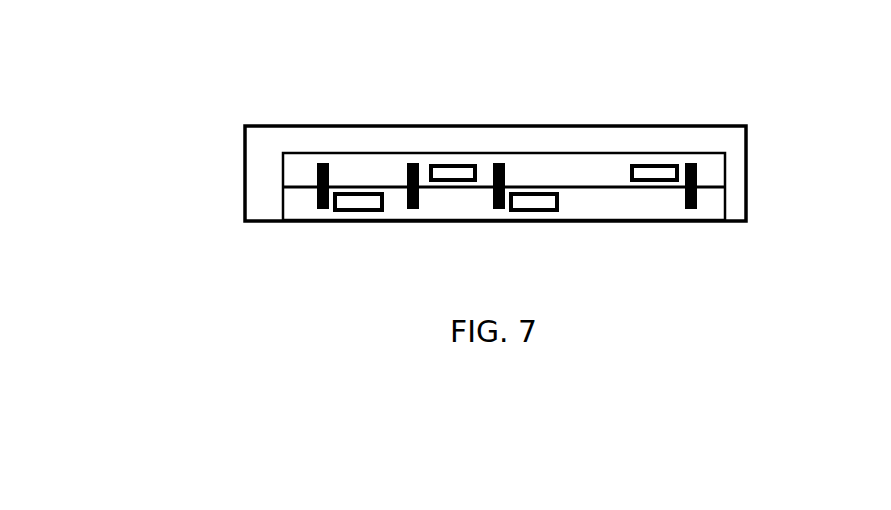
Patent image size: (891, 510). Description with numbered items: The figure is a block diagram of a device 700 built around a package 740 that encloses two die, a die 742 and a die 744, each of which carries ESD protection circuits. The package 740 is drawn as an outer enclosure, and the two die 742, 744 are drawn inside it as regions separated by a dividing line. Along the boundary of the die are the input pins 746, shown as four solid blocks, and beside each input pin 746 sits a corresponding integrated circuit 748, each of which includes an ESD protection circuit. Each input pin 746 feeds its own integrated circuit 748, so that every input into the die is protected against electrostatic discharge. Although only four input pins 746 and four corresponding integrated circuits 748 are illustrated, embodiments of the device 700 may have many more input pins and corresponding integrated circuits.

The device 700 is at (162, 80).
The package 740 is at (240, 160).
The die 742 is at (300, 205).
The die 744 is at (297, 167).
The input pins 746 is at (413, 163).
The integrated circuits 748 is at (452, 172).